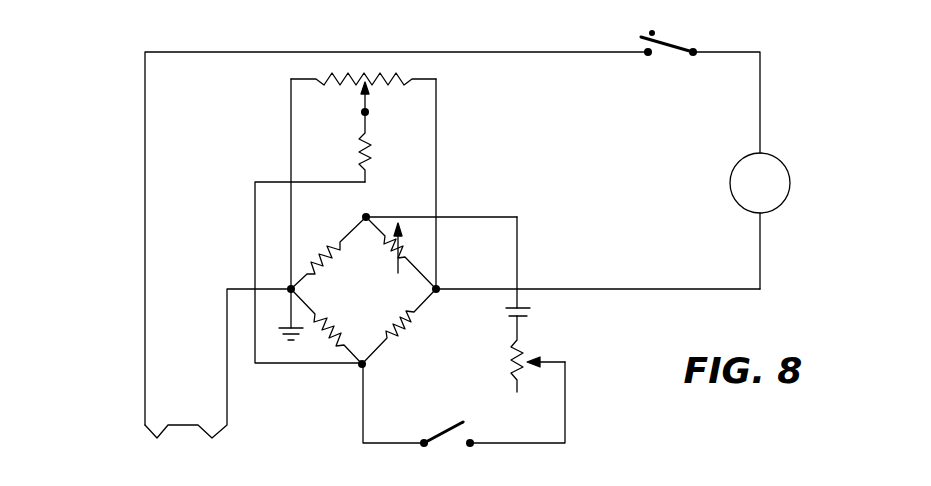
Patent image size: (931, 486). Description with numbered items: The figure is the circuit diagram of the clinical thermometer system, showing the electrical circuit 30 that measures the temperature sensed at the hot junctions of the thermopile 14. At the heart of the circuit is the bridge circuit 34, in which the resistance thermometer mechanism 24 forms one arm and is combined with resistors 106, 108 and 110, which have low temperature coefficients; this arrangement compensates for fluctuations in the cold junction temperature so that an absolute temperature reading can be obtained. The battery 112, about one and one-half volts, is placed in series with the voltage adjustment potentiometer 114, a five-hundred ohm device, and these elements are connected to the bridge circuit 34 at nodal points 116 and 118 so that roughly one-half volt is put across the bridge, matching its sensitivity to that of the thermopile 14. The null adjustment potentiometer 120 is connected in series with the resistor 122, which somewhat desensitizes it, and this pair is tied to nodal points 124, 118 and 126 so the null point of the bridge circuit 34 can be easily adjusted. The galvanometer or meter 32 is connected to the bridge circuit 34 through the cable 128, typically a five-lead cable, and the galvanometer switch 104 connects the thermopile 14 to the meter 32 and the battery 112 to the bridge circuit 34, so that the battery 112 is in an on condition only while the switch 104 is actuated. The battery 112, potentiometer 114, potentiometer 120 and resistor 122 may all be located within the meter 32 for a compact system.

The electrical circuit 30 is at (126, 128).
The galvanometer button or switch 104 is at (667, 43).
The galvanometer housing 32 is at (792, 187).
The cable 128 is at (630, 287).
The thermopile 14 is at (198, 458).
The null adjustment potentiometer 120 is at (350, 93).
The resistor 122 is at (373, 149).
The nodal point 116 is at (366, 216).
The bridge circuit 34 is at (381, 310).
The resistor 106 is at (318, 250).
The resistance thermometer mechanism 24 is at (403, 252).
The resistor 110 is at (399, 336).
The resistor 108 is at (332, 340).
The nodal point 124 is at (291, 289).
The nodal point 126 is at (437, 288).
The nodal point 118 is at (366, 366).
The battery 112 is at (539, 316).
The voltage adjustment potentiometer 114 is at (525, 373).